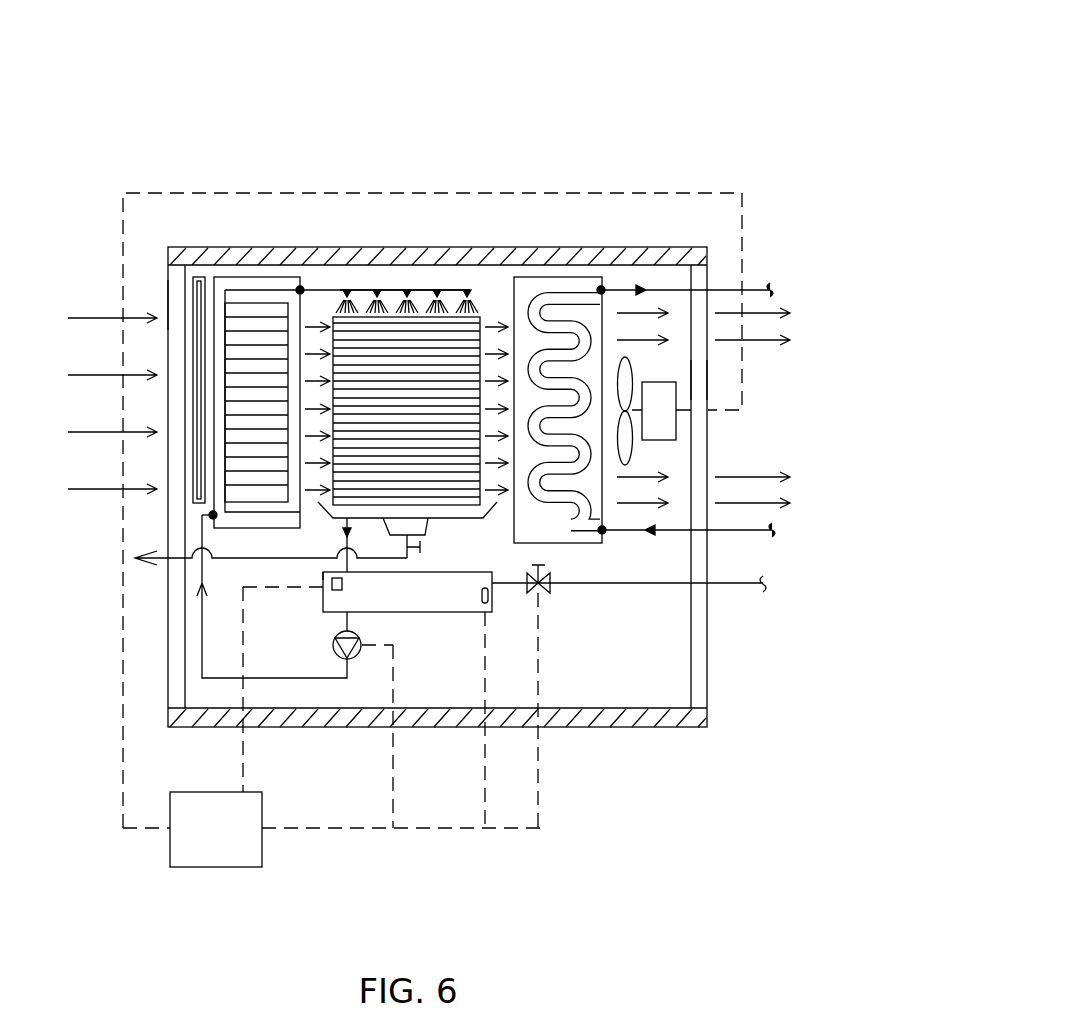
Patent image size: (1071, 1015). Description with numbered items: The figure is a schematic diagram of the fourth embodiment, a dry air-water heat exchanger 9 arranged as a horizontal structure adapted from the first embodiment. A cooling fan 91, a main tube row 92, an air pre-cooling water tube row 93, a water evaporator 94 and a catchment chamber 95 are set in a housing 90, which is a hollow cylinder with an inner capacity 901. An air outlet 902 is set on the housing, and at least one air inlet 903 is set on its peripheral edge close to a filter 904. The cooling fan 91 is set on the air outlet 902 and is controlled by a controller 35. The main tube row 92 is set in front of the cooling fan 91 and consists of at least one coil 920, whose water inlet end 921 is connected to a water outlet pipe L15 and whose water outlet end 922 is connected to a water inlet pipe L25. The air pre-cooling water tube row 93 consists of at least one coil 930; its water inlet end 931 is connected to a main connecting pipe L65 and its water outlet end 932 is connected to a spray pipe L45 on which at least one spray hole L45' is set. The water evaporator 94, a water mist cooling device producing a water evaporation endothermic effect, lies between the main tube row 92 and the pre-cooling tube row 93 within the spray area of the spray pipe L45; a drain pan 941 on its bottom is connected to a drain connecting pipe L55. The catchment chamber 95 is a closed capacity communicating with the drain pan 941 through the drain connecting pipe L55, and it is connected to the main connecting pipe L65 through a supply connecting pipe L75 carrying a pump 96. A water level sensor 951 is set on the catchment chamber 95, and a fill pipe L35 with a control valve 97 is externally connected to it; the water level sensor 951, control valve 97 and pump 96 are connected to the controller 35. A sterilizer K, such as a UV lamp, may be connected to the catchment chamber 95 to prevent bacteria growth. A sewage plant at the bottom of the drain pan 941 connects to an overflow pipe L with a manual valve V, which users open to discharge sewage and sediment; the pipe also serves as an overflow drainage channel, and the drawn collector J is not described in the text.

The dry air-water heat exchanger 9 is at (468, 173).
The housing 90 is at (250, 247).
The air inlet 903 is at (168, 302).
The filter 904 is at (198, 290).
The coil 930 is at (245, 300).
The air pre-cooling water tube row 93 is at (274, 290).
The water inlet end 931 is at (210, 515).
The water outlet end 932 is at (300, 288).
The spray pipe L45 is at (405, 193).
The spray hole L45' is at (407, 218).
The water evaporator 94 is at (482, 318).
The drain pan 941 is at (333, 518).
The water collector J is at (428, 522).
The manual valve V is at (422, 548).
The overflow pipe L is at (228, 559).
The main connecting pipe L65 is at (230, 682).
The pump 96 is at (333, 660).
The supply connecting pipe L75 is at (338, 622).
The catchment chamber 95 is at (437, 613).
The sterilizer K is at (333, 593).
The water level sensor 951 is at (490, 602).
The drain connecting pipe L55 is at (322, 572).
The fill pipe L35 is at (733, 586).
The control valve 97 is at (548, 586).
The main tube row 92 is at (548, 277).
The coil 920 is at (570, 290).
The water inlet end 921 is at (602, 290).
The water outlet end 922 is at (606, 532).
The water outlet pipe L15 is at (757, 287).
The water inlet pipe L25 is at (768, 528).
The cooling fan 91 is at (670, 423).
The inner capacity 901 is at (675, 468).
The air outlet 902 is at (698, 378).
The controller 35 is at (190, 792).